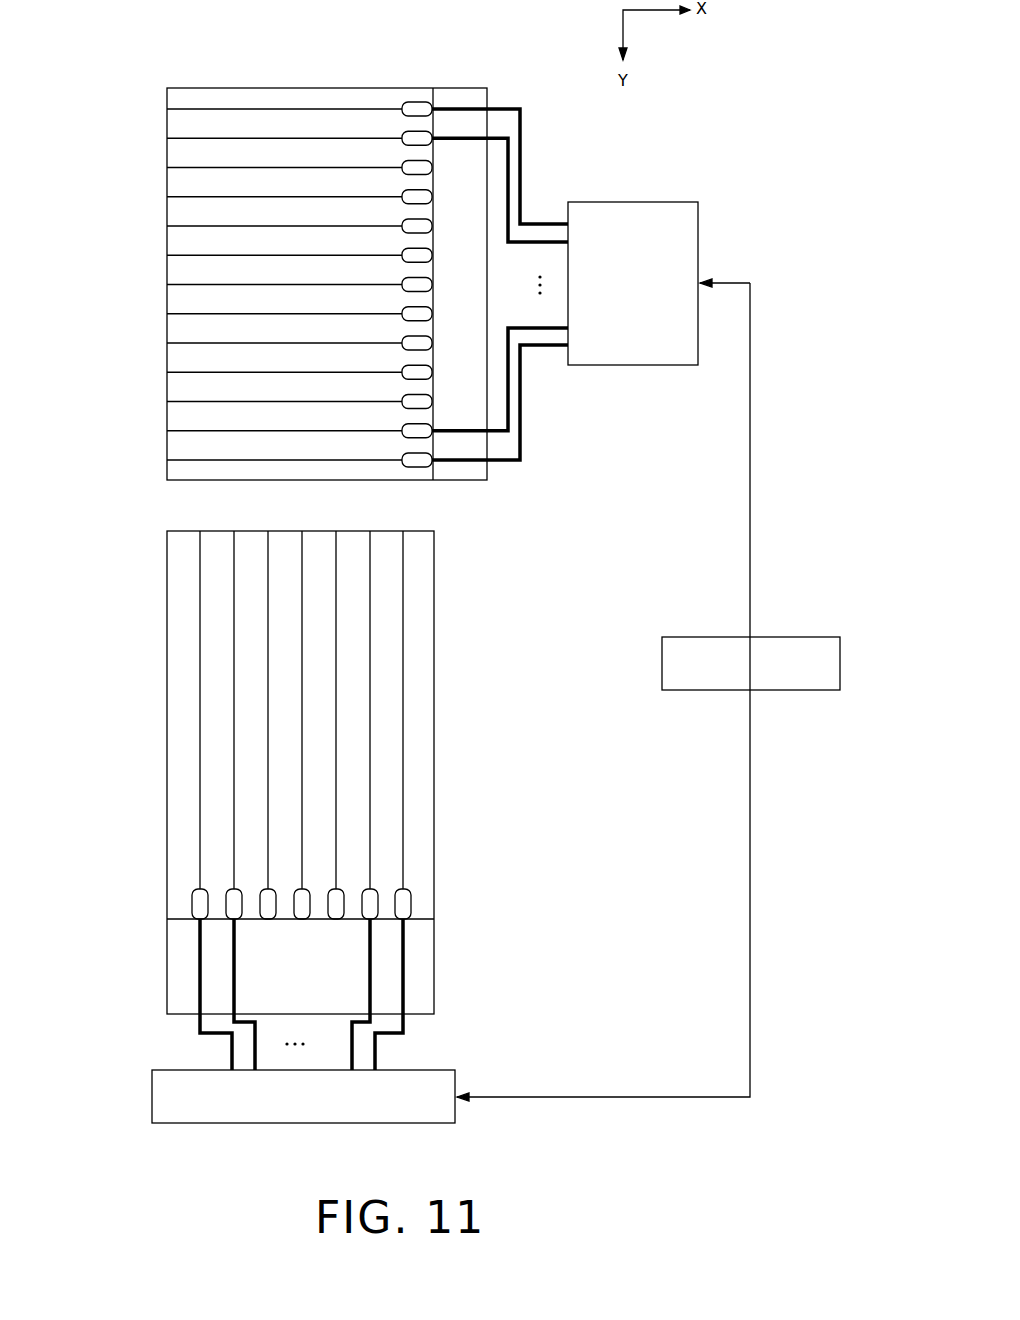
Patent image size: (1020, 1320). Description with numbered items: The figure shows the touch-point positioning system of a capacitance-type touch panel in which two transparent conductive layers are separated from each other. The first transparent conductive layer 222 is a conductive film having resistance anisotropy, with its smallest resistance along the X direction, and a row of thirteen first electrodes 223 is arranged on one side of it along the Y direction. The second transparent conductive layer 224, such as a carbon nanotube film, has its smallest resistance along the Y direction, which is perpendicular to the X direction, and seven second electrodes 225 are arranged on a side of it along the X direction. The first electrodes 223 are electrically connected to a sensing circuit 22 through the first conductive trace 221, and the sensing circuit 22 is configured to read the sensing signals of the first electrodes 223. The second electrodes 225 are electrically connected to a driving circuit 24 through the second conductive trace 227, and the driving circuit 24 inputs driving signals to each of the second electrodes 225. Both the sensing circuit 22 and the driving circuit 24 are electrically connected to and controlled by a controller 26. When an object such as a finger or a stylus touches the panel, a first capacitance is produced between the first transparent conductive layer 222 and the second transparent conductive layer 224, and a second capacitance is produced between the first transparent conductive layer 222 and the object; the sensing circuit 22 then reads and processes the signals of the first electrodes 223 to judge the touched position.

The sensing circuit 22 is at (700, 200).
The first conductive trace 221 is at (522, 150).
The first transparent conductive layer 222 is at (182, 215).
The first electrodes 223 is at (416, 108).
The second transparent conductive layer 224 is at (184, 734).
The second electrodes 225 is at (200, 905).
The second conductive trace 227 is at (200, 975).
The driving circuit 24 is at (152, 1106).
The controller 26 is at (793, 637).